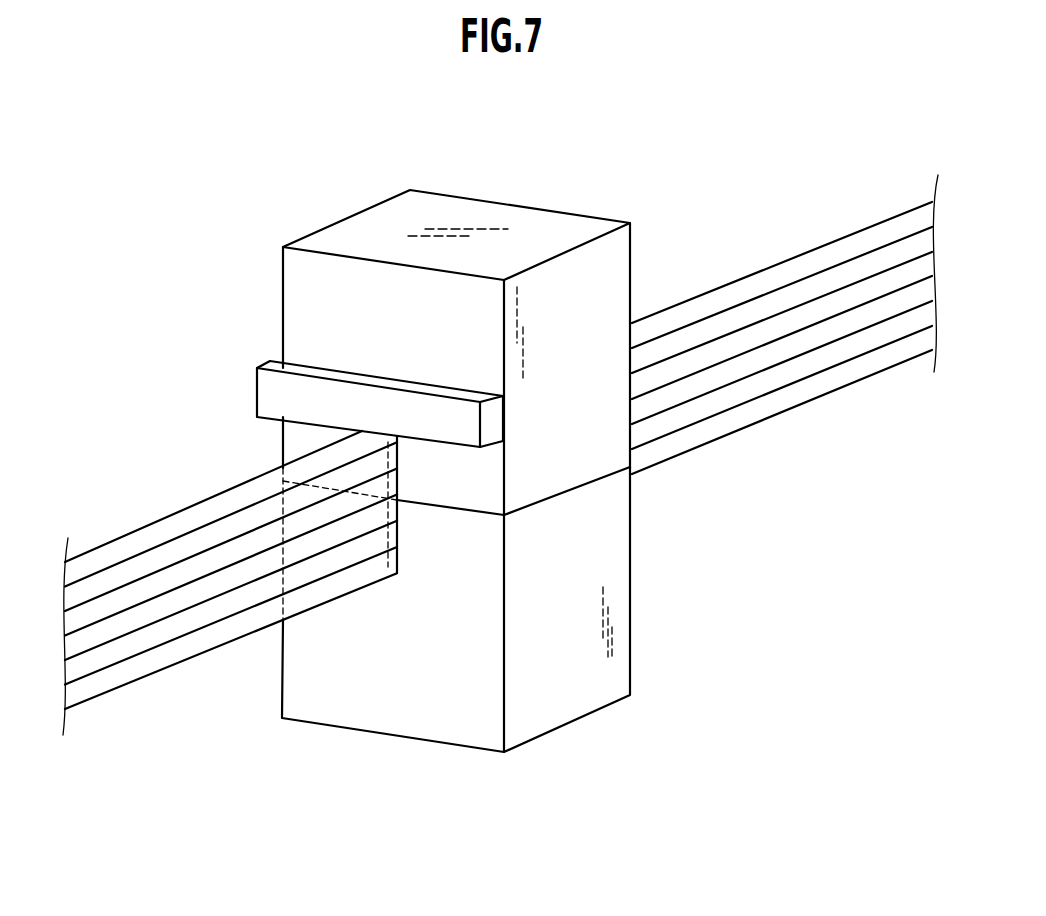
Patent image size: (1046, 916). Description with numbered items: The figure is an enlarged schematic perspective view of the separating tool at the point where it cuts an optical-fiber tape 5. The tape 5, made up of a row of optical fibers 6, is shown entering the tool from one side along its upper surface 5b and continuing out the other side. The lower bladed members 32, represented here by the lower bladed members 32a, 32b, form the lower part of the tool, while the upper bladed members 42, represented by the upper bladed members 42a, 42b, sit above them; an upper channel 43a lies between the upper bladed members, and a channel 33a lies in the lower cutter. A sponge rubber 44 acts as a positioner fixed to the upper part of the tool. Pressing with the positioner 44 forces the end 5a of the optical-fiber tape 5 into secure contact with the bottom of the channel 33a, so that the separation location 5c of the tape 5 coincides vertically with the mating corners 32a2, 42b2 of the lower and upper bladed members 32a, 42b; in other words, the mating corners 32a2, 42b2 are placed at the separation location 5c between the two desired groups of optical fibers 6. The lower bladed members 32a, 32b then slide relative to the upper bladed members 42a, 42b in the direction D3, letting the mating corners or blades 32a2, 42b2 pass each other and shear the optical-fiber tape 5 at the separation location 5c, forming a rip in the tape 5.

The optical-fiber tape 5 is at (138, 682).
The end of the optical-fiber tape 5a is at (225, 647).
The cable upper surface 5b is at (113, 540).
The separation location 5c is at (400, 501).
The optical fibers 6 is at (93, 660).
The lower bladed members 32 is at (594, 534).
The lower bladed member 32a is at (340, 528).
The mating corner of the lower bladed member 32a2 is at (390, 500).
The lower bladed member 32b is at (468, 540).
The channel 33a is at (390, 533).
The upper bladed members 42 is at (279, 290).
The upper bladed member 42a is at (310, 445).
The upper bladed member 42b is at (463, 473).
The mating corner of the upper bladed member 42b2 is at (403, 478).
The upper channel 43a is at (388, 460).
The sponge rubber 44 is at (270, 395).
The direction D3 is at (726, 645).